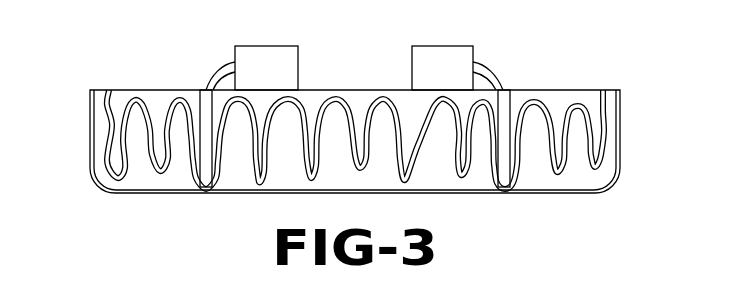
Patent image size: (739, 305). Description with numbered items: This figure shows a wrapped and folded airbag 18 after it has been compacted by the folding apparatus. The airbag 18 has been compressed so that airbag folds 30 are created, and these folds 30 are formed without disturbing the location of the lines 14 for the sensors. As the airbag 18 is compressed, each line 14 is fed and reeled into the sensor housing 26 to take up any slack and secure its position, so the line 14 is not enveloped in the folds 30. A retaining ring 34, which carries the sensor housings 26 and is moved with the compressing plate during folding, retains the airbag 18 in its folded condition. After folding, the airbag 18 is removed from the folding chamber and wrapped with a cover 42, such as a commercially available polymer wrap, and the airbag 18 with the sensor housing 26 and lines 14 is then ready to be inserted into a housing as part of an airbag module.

The line 14 is at (207, 153).
The airbag 18 is at (566, 171).
The sensor housing 26 is at (248, 46).
The folds 30 is at (133, 140).
The retaining ring 34 is at (143, 90).
The cover 42 is at (532, 194).